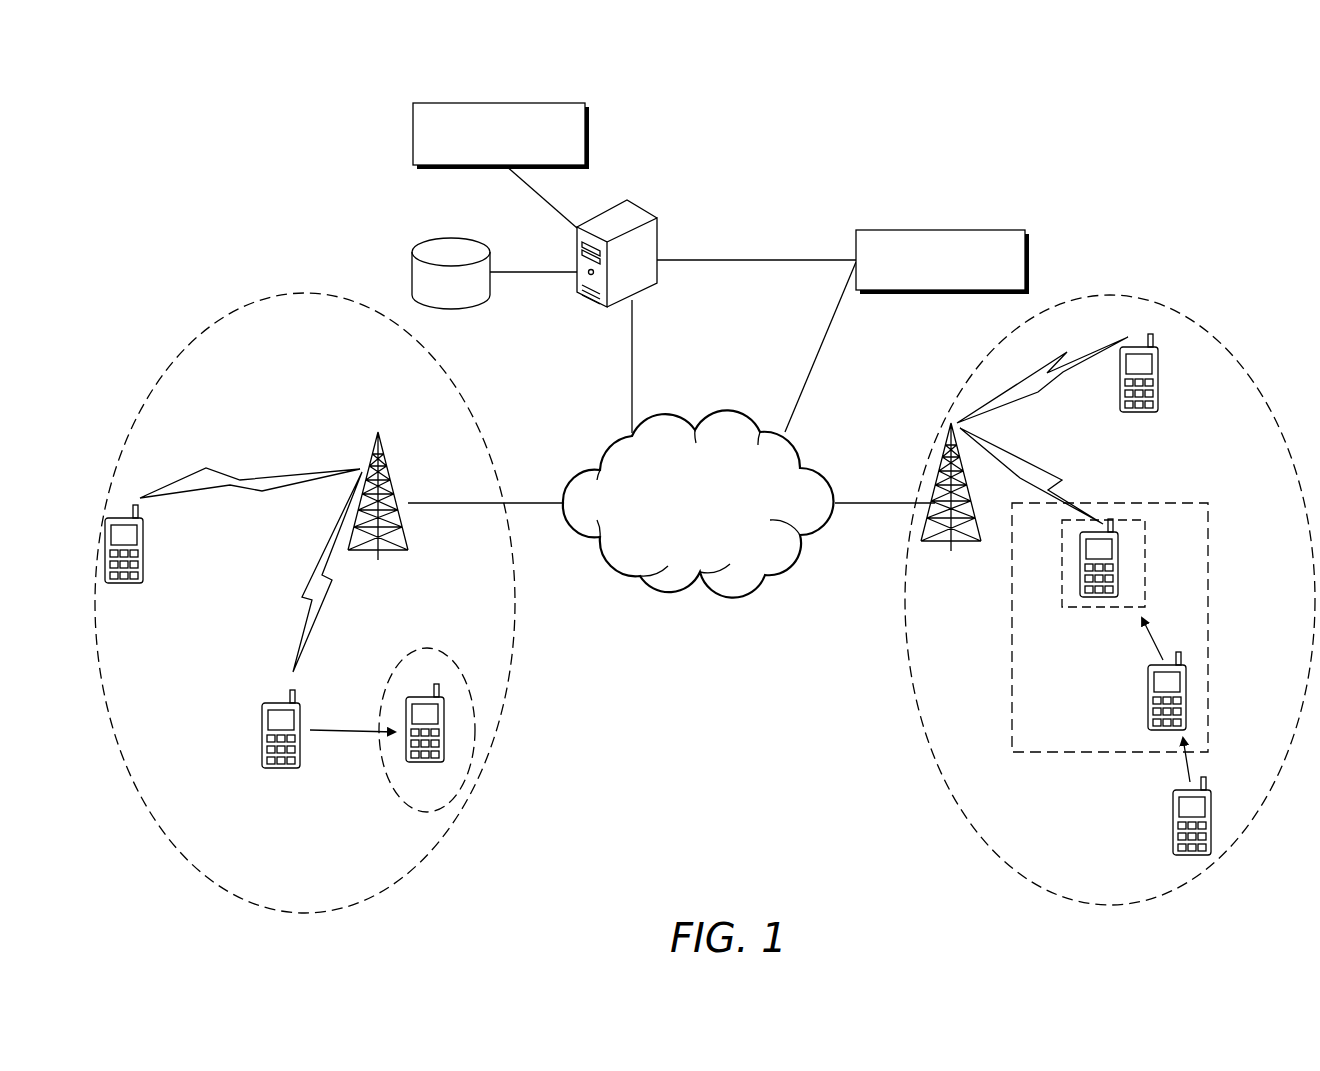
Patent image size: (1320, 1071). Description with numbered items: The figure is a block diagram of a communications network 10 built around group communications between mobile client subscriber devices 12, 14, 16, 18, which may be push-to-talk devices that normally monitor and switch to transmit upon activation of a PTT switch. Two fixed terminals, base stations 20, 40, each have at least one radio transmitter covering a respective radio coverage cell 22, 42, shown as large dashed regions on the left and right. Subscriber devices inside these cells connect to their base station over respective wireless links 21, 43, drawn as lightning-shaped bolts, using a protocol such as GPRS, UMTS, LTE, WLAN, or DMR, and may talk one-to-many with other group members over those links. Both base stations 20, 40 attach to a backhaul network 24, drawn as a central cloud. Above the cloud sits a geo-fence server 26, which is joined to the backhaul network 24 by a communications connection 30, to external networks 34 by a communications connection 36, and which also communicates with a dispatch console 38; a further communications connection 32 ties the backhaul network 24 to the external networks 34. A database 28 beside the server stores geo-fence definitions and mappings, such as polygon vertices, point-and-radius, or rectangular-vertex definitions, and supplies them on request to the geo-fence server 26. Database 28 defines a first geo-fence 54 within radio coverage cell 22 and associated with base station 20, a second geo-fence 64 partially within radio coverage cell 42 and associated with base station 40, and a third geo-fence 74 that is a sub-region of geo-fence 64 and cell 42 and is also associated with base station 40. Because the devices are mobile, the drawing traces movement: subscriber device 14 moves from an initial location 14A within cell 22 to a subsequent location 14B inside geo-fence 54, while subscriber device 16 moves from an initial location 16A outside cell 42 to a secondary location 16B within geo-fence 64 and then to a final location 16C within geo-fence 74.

The communications network 10 is at (126, 126).
The client subscriber device 12 is at (120, 517).
The client subscriber device 14 is at (282, 702).
The initial location 14A is at (278, 776).
The subsequent location 14B is at (422, 775).
The client subscriber device 16 is at (1118, 568).
The initial location 16A is at (1192, 860).
The secondary location 16B is at (1158, 740).
The final location 16C is at (1090, 614).
The client subscriber device 18 is at (1160, 385).
The fixed terminal 20 is at (385, 468).
The wireless link 21 is at (245, 505).
The radio coverage cell 22 is at (190, 345).
The backhaul network 24 is at (835, 515).
The geo-fence server 26 is at (657, 252).
The database 28 is at (450, 232).
The communications connection 30 is at (632, 345).
The communications connection 32 is at (815, 343).
The external networks 34 is at (940, 230).
The communications connection 36 is at (755, 260).
The dispatch console 38 is at (413, 130).
The fixed terminal 40 is at (947, 452).
The radio coverage cell 42 is at (1215, 338).
The wireless link 43 is at (1068, 385).
The first geo-fence 54 is at (440, 648).
The second geo-fence 64 is at (1180, 503).
The third geo-fence 74 is at (1146, 590).